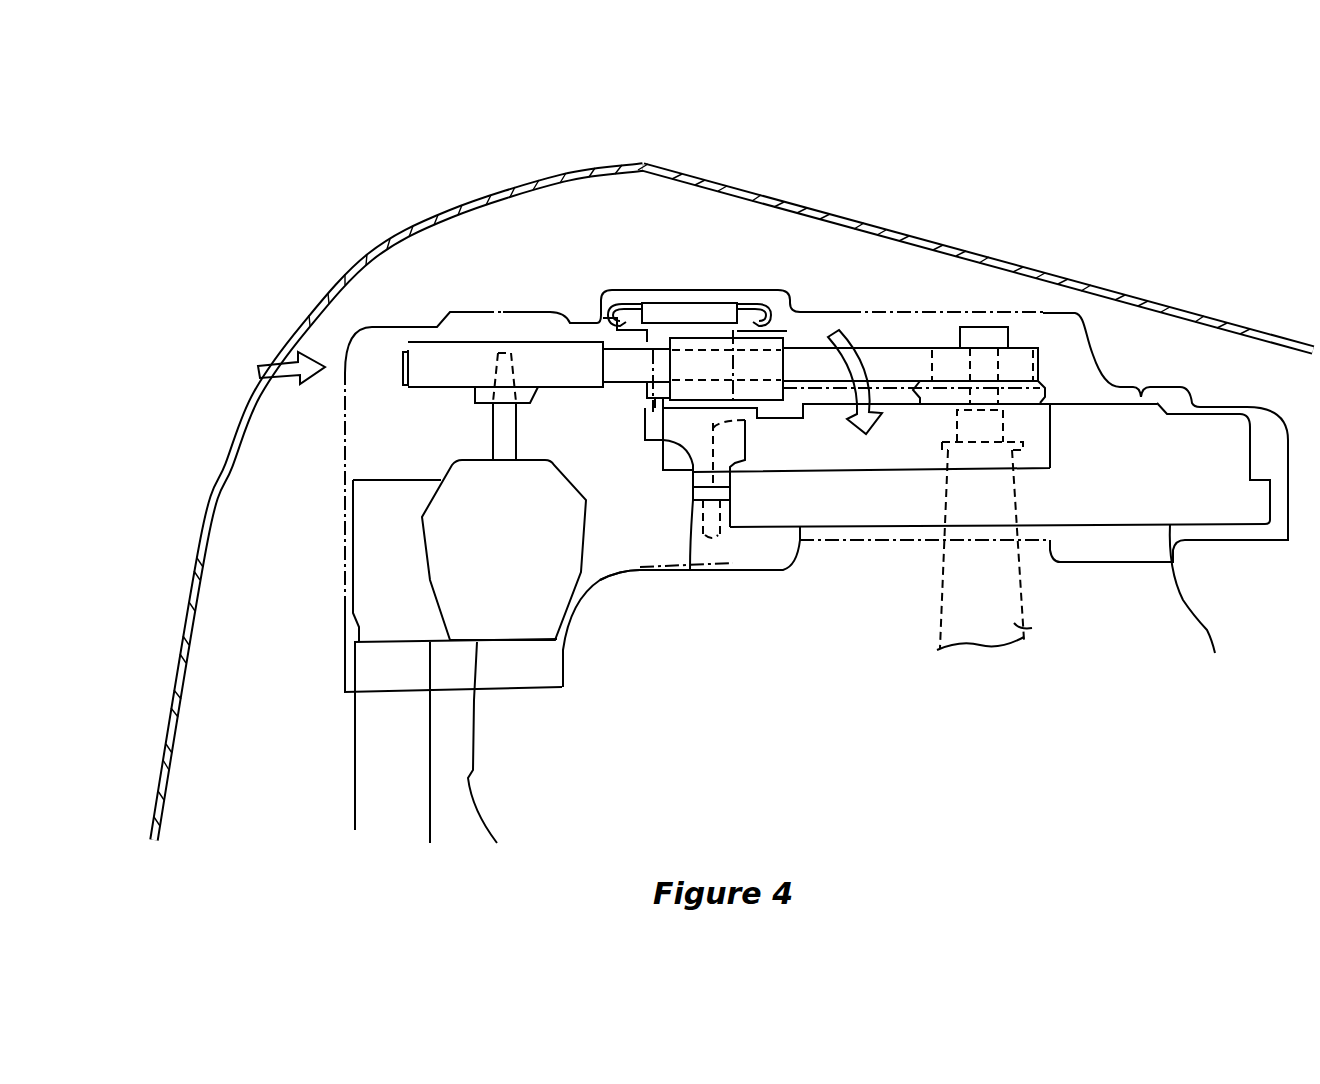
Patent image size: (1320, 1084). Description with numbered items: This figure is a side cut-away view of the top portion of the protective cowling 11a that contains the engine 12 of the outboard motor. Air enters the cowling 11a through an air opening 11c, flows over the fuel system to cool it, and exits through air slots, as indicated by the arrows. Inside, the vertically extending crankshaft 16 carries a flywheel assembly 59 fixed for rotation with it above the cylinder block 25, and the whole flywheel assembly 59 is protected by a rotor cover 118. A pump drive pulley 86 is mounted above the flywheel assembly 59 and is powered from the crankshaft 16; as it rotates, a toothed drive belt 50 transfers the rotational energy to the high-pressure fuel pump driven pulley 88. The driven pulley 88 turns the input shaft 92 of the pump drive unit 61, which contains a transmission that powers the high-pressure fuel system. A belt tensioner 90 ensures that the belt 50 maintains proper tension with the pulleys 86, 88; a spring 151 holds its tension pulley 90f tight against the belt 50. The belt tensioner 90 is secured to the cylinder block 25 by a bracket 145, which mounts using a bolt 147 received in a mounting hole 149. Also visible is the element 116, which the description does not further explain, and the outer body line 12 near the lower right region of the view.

The protective cowling 11a is at (924, 243).
The air opening 11c is at (335, 297).
The engine 12 is at (1216, 629).
The crankshaft 16 is at (1020, 592).
The cylinder block 25 is at (643, 594).
The drive belt 50 is at (905, 360).
The flywheel assembly 59 is at (1143, 394).
The pump drive unit 61 is at (562, 608).
The pump drive pulley 86 is at (952, 347).
The high-pressure fuel pump driven pulley 88 is at (503, 340).
The belt tensioner 90 is at (795, 323).
The tension pulley 90f is at (713, 337).
The input shaft 92 is at (503, 422).
The housing 116 is at (1053, 442).
The rotor cover 118 is at (849, 543).
The bracket 145 is at (653, 430).
The bolt 147 is at (690, 480).
The mounting hole 149 is at (733, 517).
The spring 151 is at (673, 312).